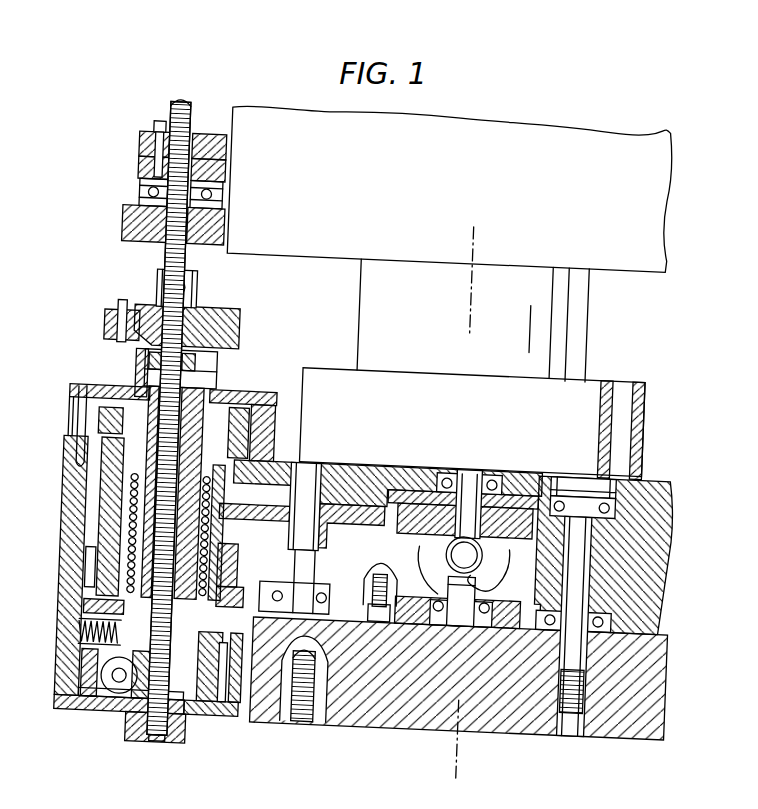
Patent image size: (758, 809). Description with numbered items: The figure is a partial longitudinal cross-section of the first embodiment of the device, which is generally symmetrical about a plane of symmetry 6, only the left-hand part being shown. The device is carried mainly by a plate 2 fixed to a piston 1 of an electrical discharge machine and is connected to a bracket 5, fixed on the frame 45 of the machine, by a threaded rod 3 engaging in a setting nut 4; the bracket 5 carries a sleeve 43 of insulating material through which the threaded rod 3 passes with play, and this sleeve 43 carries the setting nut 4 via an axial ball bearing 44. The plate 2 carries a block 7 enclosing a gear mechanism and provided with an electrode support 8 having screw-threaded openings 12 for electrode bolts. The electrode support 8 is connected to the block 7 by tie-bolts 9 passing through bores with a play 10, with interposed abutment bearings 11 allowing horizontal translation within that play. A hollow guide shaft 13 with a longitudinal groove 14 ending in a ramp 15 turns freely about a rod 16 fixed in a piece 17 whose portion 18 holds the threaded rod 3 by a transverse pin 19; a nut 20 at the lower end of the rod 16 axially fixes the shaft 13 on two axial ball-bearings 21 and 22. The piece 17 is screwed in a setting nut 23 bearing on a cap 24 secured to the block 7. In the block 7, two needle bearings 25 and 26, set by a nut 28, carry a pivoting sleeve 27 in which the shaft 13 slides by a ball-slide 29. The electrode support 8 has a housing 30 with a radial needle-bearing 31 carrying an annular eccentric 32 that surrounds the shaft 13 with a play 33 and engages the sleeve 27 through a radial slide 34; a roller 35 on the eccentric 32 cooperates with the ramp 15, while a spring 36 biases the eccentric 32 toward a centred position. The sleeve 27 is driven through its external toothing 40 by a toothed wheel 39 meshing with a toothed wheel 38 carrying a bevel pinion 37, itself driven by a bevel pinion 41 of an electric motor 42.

The piston 1 is at (473, 320).
The plate 2 is at (472, 424).
The threaded rod 3 is at (182, 108).
The setting nut 4 is at (150, 132).
The bracket 5 is at (126, 222).
The plane of symmetry 6 is at (476, 236).
The block 7 is at (88, 450).
The electrode support 8 is at (66, 675).
The tie-bolt 9 is at (574, 736).
The play 10 is at (582, 470).
The abutment bearing 11 is at (640, 478).
The screw-threaded opening 12 is at (310, 726).
The hollow guide shaft 13 is at (136, 378).
The longitudinal groove 14 is at (124, 452).
The ramp 15 is at (124, 704).
The rod 16 is at (162, 752).
The piece 17 is at (207, 312).
The portion 18 is at (160, 286).
The transverse pin 19 is at (192, 284).
The nut 20 is at (142, 744).
The axial ball-bearing 21 is at (194, 726).
The axial ball-bearing 22 is at (218, 364).
The setting nut 23 is at (110, 318).
The cap 24 is at (80, 390).
The combined axial and radial needle bearing 25 is at (80, 575).
The combined axial and radial needle bearing 26 is at (254, 444).
The sleeve 27 is at (80, 612).
The nut 28 is at (254, 404).
The ball-slide 29 is at (112, 498).
The housing 30 is at (248, 722).
The radial needle-bearing 31 is at (80, 716).
The eccentric 32 is at (92, 714).
The play 33 is at (242, 722).
The radial slide 34 is at (254, 600).
The roller 35 is at (98, 710).
The spring 36 is at (86, 632).
The bevel pinion 37 is at (438, 470).
The toothed wheel 38 is at (390, 470).
The toothed wheel 39 is at (282, 524).
The external toothing 40 is at (106, 520).
The bevel pinion 41 is at (500, 572).
The electric motor 42 is at (394, 586).
The sleeve 43 is at (148, 192).
The axial ball bearing 44 is at (148, 174).
The frame 45 is at (450, 188).